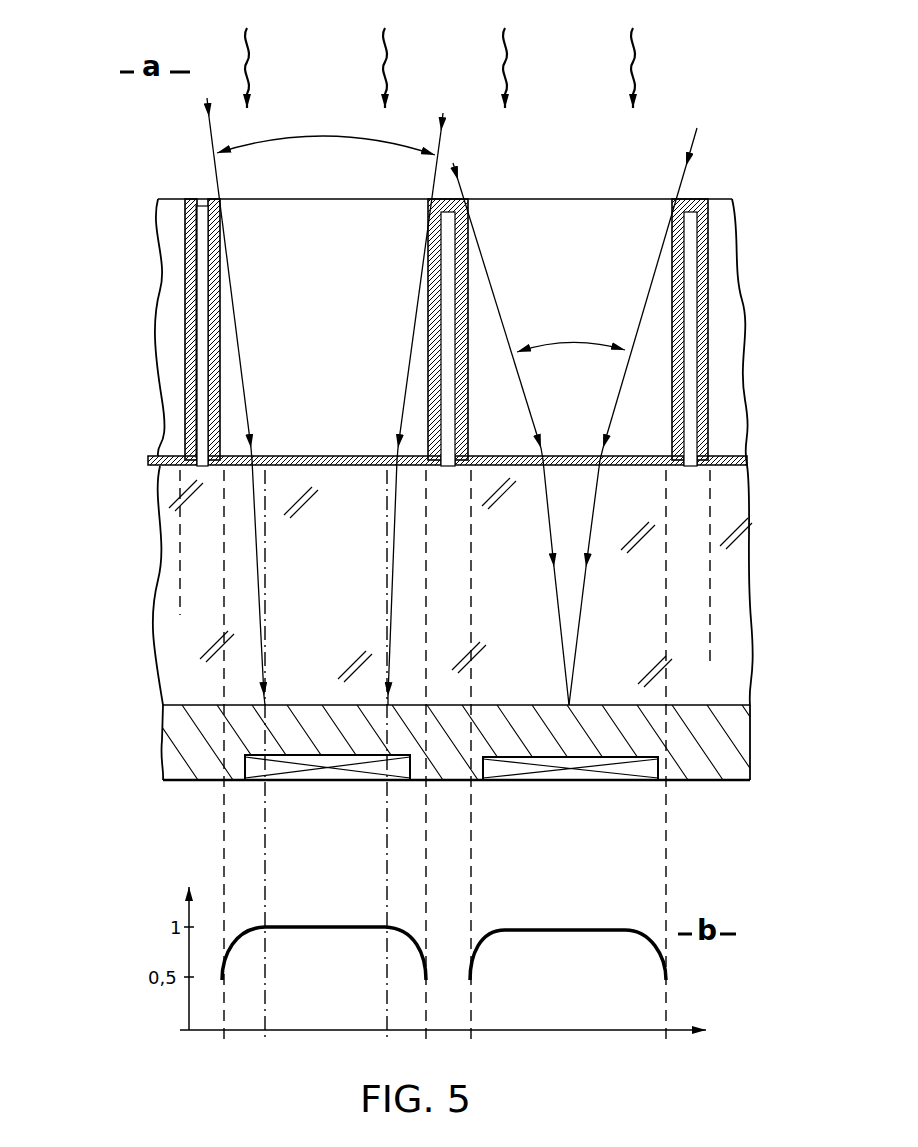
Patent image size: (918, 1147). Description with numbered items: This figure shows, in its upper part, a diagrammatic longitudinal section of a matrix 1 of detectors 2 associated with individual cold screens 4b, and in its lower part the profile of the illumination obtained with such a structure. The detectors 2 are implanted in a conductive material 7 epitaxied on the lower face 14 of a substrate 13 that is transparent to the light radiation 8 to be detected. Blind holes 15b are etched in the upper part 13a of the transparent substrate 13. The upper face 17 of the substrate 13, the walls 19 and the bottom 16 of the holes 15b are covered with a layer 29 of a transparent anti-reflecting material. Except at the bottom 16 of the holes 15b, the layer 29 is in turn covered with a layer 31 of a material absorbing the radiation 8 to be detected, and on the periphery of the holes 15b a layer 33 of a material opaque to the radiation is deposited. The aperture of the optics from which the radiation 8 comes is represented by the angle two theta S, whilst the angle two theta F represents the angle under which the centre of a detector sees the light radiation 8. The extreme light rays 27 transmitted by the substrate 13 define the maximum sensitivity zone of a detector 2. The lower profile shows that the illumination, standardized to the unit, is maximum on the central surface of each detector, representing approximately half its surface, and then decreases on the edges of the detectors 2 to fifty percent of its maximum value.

The matrix 1 is at (587, 786).
The detectors 2 is at (522, 768).
The conductive material 7 is at (192, 742).
The light radiation 8 is at (636, 64).
The substrate 13 is at (140, 584).
The upper part of transparent substrate 13a is at (648, 208).
The lower face 14 is at (200, 702).
The holes 15b is at (570, 216).
The bottom 16 is at (330, 456).
The upper face 17 is at (201, 208).
The walls 19 is at (196, 384).
The extreme light rays 27 is at (390, 548).
The layer of transparent anti-reflecting material 29 is at (191, 262).
The layer of absorbing material 31 is at (188, 316).
The layer of opaque material 33 is at (183, 455).
The individual cold screen 4b is at (736, 250).